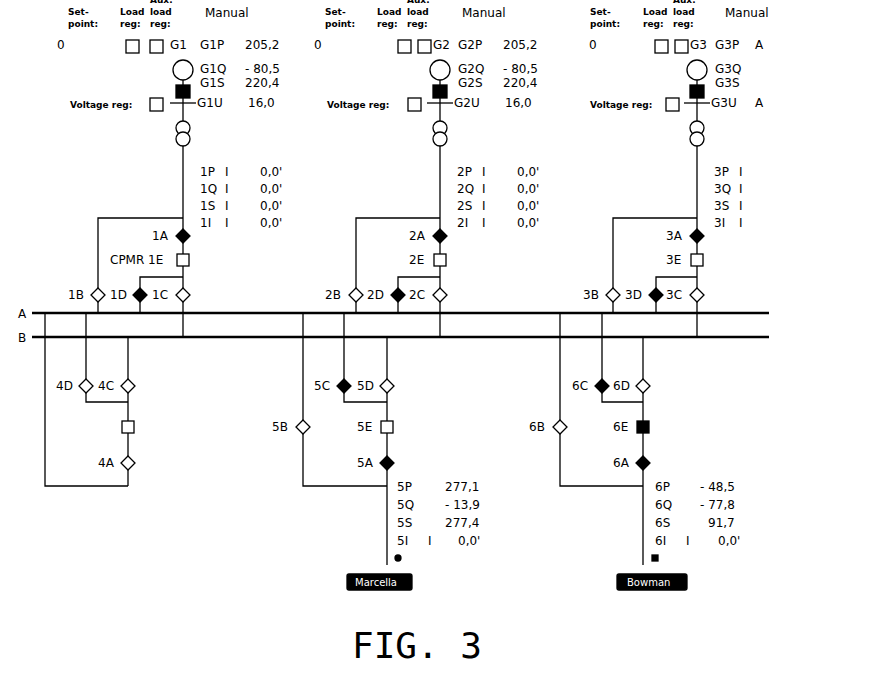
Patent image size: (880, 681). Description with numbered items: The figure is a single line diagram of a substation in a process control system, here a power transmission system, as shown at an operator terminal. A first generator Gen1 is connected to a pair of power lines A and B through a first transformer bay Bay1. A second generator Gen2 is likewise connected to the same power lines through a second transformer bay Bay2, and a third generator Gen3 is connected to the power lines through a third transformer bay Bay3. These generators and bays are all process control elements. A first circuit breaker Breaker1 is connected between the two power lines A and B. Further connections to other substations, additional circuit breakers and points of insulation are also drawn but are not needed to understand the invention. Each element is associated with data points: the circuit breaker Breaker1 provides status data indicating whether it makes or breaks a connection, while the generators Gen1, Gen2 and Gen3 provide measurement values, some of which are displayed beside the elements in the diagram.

The first generator Gen1 is at (170, 69).
The second generator Gen2 is at (428, 68).
The third generator Gen3 is at (686, 67).
The first transformer bay Bay1 is at (170, 132).
The second transformer bay Bay2 is at (428, 133).
The third transformer bay Bay3 is at (686, 137).
The first circuit breaker Breaker1 is at (134, 431).